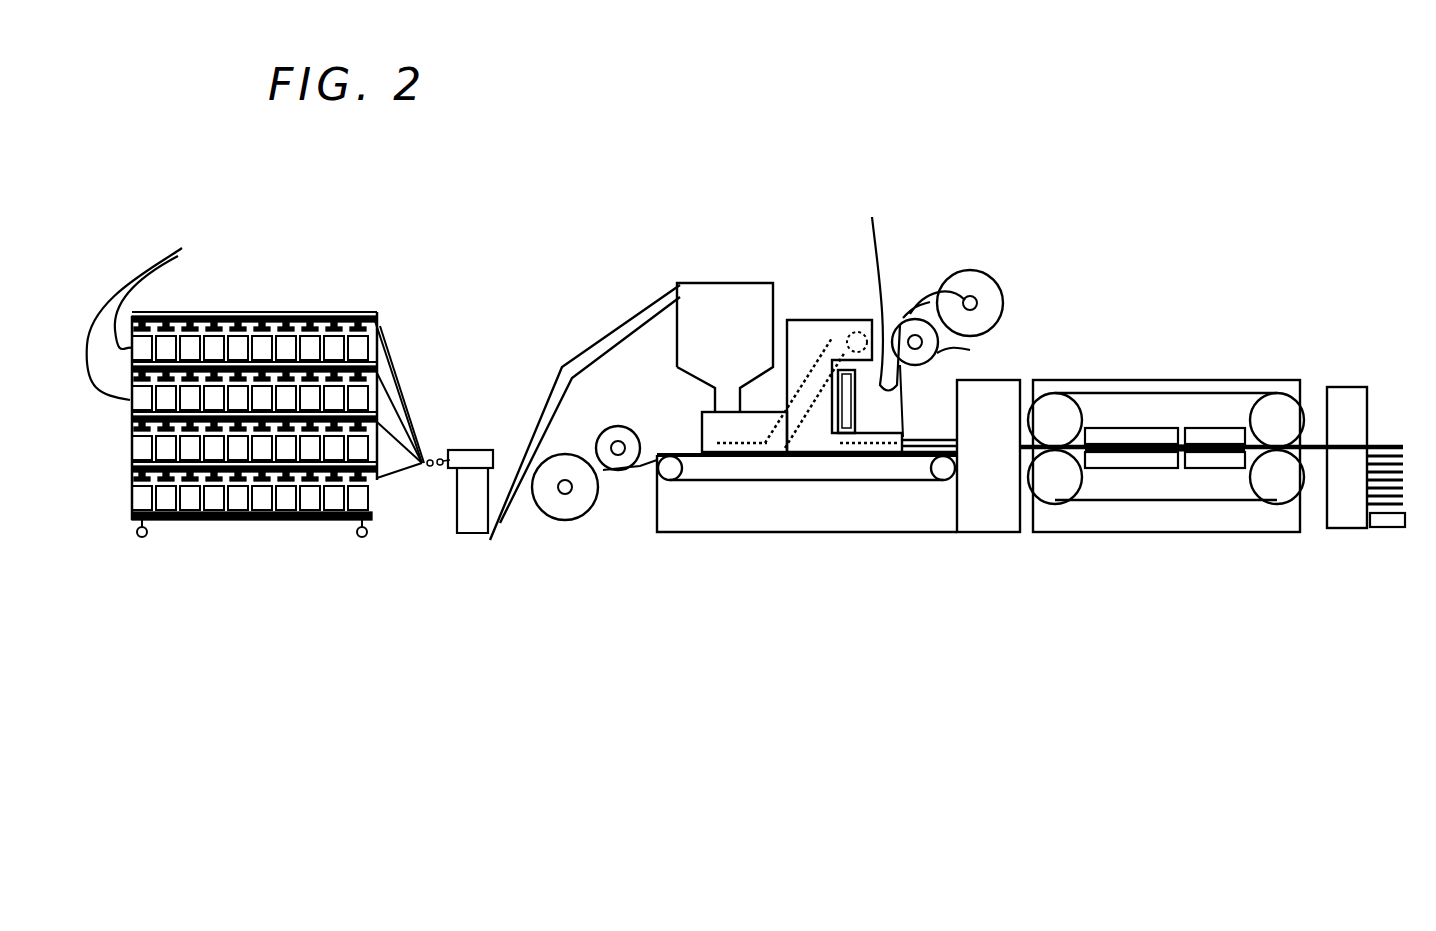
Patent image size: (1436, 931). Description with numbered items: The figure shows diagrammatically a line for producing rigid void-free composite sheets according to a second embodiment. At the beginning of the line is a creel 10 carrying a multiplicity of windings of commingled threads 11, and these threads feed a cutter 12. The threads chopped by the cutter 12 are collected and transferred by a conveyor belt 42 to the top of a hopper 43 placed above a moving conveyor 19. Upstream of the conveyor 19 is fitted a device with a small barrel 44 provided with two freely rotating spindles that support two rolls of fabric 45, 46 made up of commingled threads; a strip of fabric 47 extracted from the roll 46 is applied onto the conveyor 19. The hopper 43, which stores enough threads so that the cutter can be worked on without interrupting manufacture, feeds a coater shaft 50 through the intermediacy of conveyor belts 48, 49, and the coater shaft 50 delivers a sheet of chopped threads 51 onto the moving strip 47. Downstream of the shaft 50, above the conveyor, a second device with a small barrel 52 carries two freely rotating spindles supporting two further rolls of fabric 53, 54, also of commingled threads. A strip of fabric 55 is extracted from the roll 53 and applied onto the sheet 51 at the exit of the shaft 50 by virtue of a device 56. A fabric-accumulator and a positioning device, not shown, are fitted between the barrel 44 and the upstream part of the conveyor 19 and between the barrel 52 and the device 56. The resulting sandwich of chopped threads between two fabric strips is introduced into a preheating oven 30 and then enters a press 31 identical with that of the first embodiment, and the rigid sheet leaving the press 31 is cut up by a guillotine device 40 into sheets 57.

The creel 10 is at (247, 520).
The commingled threads 11 is at (268, 349).
The cutter 12 is at (472, 452).
The moving conveyor 19 is at (868, 481).
The preheating oven 30 is at (1003, 532).
The press 31 is at (1180, 373).
The guillotine device 40 is at (1342, 410).
The conveyor belt 42 is at (602, 348).
The hopper 43 is at (708, 305).
The small barrel 44 is at (603, 497).
The roll of fabric 45 is at (535, 506).
The roll of fabric 46 is at (613, 432).
The strip of fabric 47 is at (650, 475).
The conveyor belt 48 is at (757, 456).
The conveyor belt 49 is at (803, 368).
The coater shaft 50 is at (823, 407).
The sheet of chopped threads 51 is at (933, 478).
The small barrel 52 is at (970, 348).
The roll of fabric 53 is at (900, 320).
The roll of fabric 54 is at (975, 292).
The strip of fabric 55 is at (874, 289).
The device 56 is at (912, 436).
The sheets 57 is at (1427, 483).